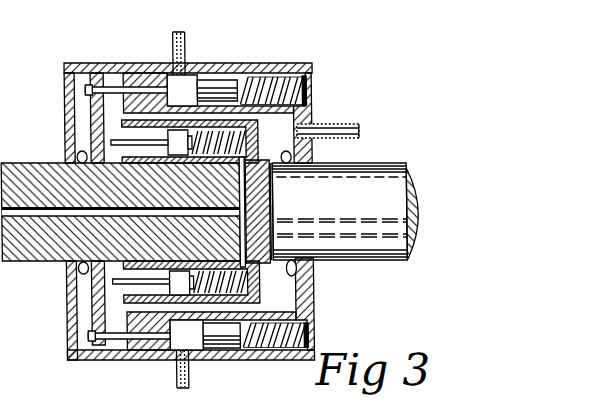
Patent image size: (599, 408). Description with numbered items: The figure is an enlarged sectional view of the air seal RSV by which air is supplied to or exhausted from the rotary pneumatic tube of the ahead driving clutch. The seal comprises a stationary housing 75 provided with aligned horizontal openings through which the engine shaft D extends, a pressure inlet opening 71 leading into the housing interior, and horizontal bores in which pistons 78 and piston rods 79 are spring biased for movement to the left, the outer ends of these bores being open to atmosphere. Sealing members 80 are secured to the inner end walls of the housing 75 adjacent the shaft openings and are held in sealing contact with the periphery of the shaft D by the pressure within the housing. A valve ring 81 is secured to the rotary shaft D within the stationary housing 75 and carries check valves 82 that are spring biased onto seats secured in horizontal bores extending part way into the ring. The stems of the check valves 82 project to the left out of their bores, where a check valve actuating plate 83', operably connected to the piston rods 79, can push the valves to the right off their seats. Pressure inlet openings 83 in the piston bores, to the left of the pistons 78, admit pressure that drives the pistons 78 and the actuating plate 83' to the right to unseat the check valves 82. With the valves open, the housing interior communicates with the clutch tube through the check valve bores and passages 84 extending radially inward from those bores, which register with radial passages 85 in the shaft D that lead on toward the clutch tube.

The pressure inlet opening 71 is at (330, 124).
The stationary housing 75 is at (304, 308).
The piston 78 is at (218, 85).
The piston rod 79 is at (145, 90).
The sealing member 80 is at (77, 264).
The valve ring 81 is at (250, 273).
The check valve 82 is at (110, 142).
The pressure inlet opening 83 is at (183, 214).
The check valve actuating plate 83' is at (63, 209).
The passage 84 is at (246, 160).
The radial passage 85 is at (244, 227).
The engine shaft D is at (406, 262).
The air seal RSV is at (305, 62).